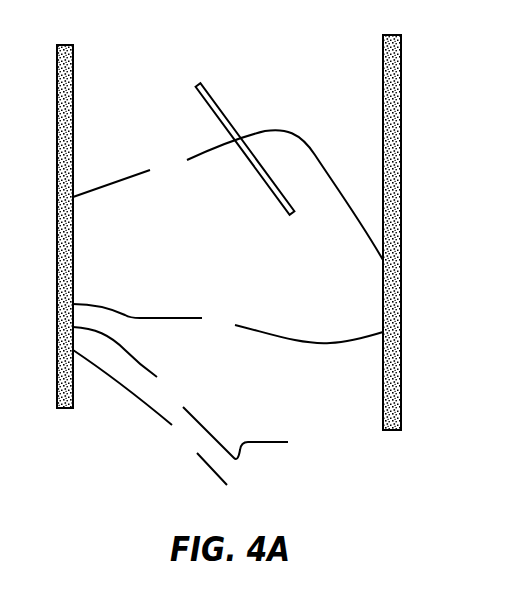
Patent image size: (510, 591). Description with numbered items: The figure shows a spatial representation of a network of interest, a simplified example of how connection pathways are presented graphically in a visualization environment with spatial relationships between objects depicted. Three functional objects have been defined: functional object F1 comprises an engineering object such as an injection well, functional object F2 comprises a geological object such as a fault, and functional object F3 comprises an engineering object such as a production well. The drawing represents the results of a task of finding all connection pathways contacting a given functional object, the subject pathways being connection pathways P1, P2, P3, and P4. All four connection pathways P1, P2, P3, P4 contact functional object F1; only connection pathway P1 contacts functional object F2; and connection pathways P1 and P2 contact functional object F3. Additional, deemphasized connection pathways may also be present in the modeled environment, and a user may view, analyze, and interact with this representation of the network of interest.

The functional object F1 is at (64, 209).
The functional object F2 is at (243, 130).
The functional object F3 is at (395, 217).
The connection pathway P1 is at (228, 195).
The connection pathway P2 is at (228, 323).
The connection pathway P3 is at (180, 393).
The connection pathway P4 is at (150, 417).